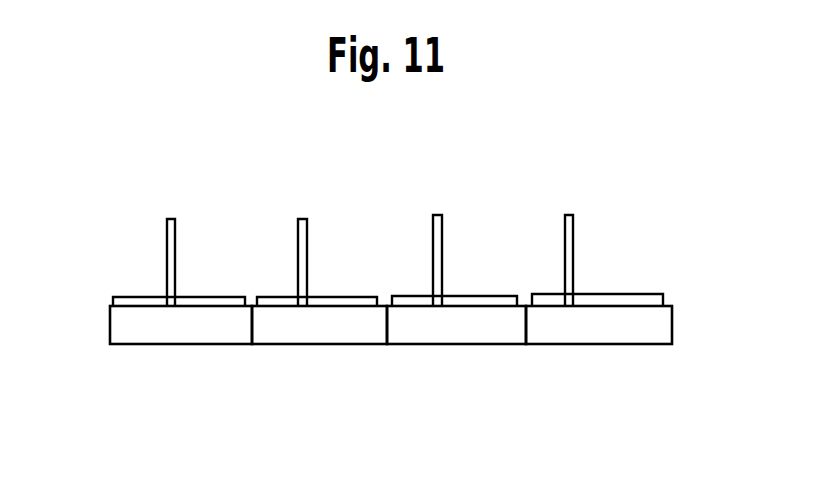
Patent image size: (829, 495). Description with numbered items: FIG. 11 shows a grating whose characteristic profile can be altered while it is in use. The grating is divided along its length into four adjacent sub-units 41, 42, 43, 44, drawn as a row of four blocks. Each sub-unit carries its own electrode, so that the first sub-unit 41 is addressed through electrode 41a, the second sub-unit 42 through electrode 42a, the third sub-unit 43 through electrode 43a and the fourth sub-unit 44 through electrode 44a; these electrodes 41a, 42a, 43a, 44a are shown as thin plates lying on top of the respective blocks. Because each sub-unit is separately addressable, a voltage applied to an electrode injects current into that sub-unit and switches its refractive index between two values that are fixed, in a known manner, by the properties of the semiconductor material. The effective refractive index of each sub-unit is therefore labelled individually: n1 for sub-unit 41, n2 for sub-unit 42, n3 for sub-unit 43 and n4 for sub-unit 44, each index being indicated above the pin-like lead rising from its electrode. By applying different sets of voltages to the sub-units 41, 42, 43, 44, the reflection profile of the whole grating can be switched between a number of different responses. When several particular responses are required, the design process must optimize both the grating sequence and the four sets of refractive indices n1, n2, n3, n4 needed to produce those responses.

The first grating sub-unit 41 is at (177, 345).
The second grating sub-unit 42 is at (308, 345).
The third grating sub-unit 43 is at (452, 345).
The fourth grating sub-unit 44 is at (599, 345).
The electrode of first sub-unit 41a is at (195, 297).
The electrode of second sub-unit 42a is at (326, 297).
The electrode of third sub-unit 43a is at (465, 295).
The electrode of fourth sub-unit 44a is at (598, 295).
The effective refractive index of first sub-unit n1 is at (175, 252).
The effective refractive index of second sub-unit n2 is at (307, 252).
The effective refractive index of third sub-unit n3 is at (442, 252).
The effective refractive index of fourth sub-unit n4 is at (575, 252).